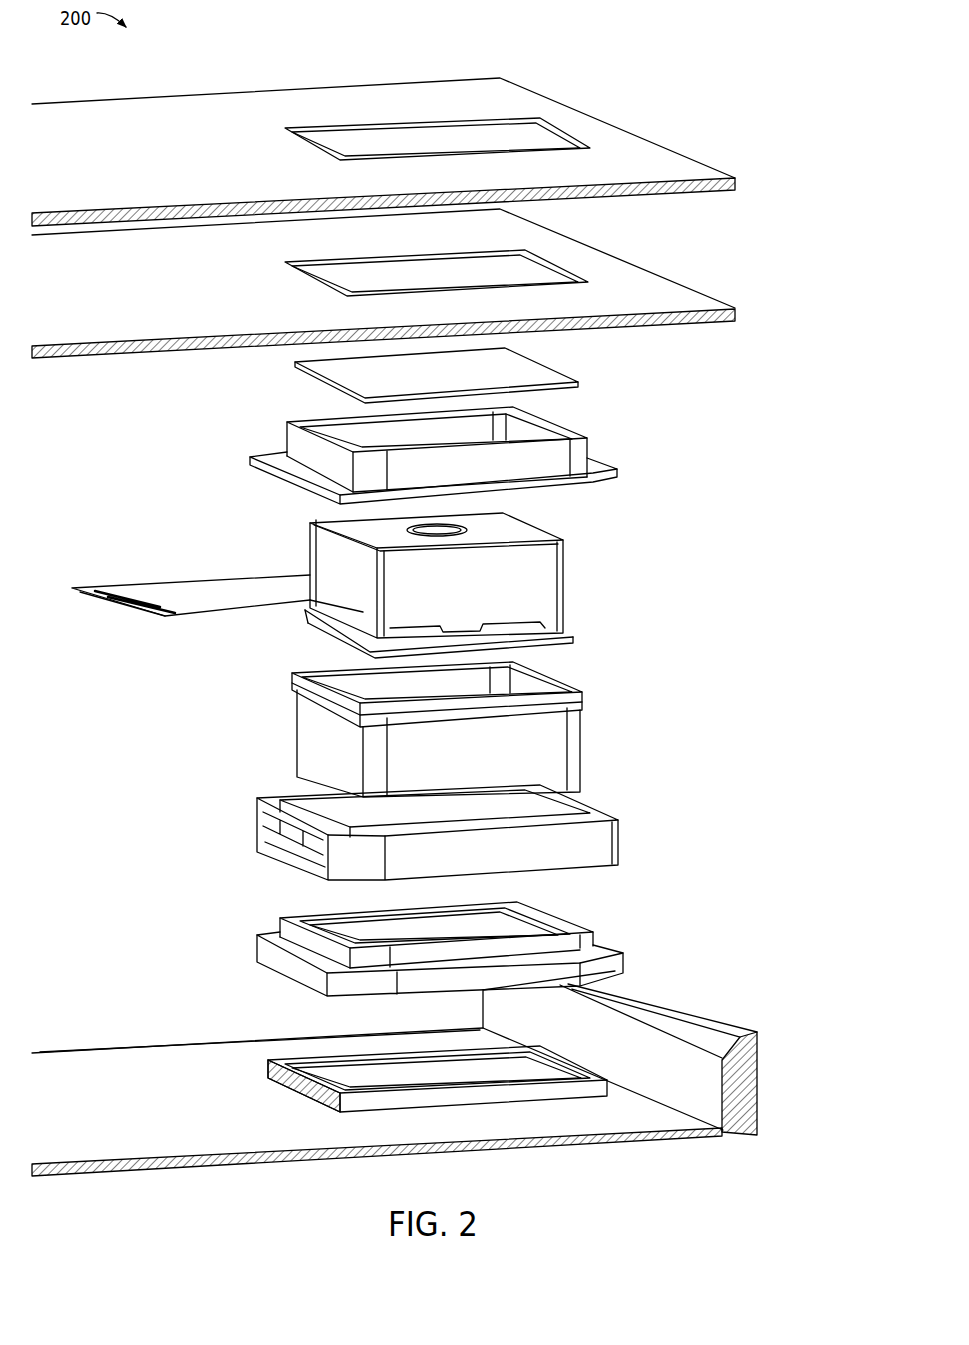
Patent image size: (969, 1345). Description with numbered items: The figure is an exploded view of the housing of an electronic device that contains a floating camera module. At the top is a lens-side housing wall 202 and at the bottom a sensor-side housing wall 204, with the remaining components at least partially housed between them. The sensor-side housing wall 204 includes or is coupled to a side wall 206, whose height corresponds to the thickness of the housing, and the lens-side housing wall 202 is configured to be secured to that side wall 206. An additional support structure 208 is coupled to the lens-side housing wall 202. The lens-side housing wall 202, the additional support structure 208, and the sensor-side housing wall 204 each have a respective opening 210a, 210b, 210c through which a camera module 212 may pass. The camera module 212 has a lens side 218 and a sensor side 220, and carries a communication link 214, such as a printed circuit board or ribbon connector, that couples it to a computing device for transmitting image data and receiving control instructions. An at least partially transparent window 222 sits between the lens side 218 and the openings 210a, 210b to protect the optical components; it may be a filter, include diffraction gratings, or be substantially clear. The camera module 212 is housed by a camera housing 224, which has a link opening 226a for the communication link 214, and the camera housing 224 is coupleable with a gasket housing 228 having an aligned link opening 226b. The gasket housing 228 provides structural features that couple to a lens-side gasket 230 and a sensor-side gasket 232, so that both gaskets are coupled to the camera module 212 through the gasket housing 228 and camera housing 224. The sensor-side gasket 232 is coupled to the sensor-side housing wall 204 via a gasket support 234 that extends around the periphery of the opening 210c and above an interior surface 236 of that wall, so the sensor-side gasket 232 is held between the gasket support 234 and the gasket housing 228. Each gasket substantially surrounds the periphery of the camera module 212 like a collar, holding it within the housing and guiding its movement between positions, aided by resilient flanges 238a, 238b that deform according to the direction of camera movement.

The lens-side housing wall 202 is at (635, 142).
The sensor-side housing wall 204 is at (637, 1136).
The side wall 206 is at (433, 1089).
The additional support structure 208 is at (707, 303).
The opening 210a is at (376, 126).
The opening 210b is at (389, 258).
The opening 210c is at (385, 1078).
The camera module 212 is at (533, 572).
The communication link 214 is at (205, 585).
The lens side 218 is at (340, 523).
The sensor side 220 is at (340, 642).
The at least partially transparent window 222 is at (580, 356).
The camera housing 224 is at (580, 718).
The link opening 226a is at (302, 722).
The link opening 226b is at (270, 830).
The gasket housing 228 is at (570, 840).
The lens-side gasket 230 is at (605, 480).
The sensor-side gasket 232 is at (593, 953).
The gasket support 234 is at (285, 1060).
The interior surface 236 is at (120, 1063).
The resilient flange 238a is at (268, 450).
The resilient flange 238b is at (268, 940).